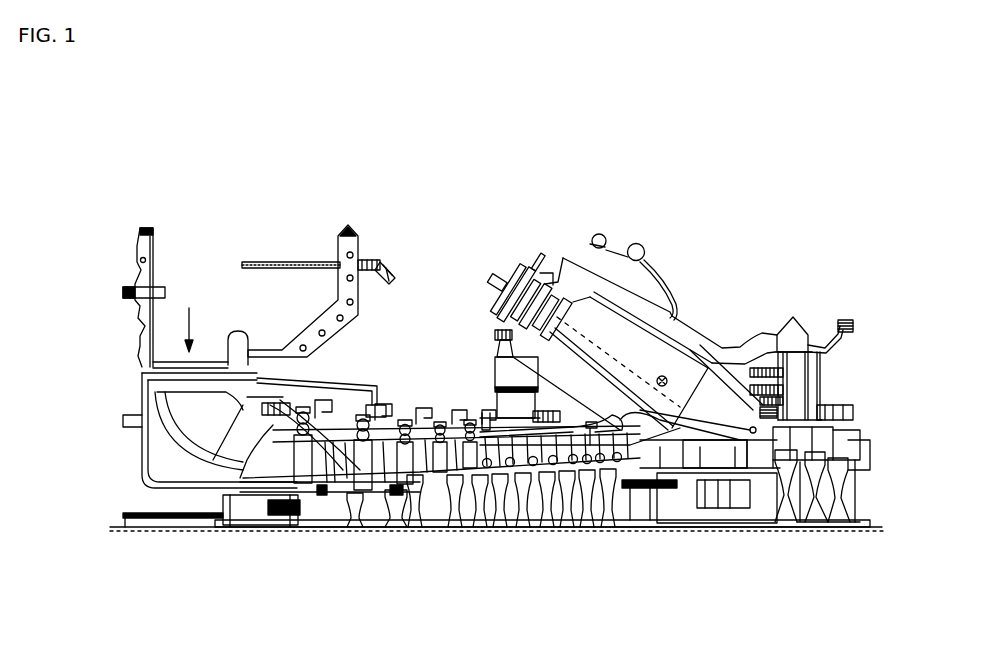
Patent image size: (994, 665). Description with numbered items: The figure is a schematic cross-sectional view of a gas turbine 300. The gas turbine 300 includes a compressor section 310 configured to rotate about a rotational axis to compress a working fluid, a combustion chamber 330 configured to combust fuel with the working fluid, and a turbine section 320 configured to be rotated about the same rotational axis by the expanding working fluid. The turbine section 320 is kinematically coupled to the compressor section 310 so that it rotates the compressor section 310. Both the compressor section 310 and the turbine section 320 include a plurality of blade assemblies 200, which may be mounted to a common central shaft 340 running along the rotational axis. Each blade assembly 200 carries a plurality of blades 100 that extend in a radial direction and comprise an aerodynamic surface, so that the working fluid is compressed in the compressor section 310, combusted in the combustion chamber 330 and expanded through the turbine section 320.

The gas turbine 300 is at (734, 143).
The compressor section 310 is at (405, 539).
The combustion chamber 330 is at (651, 343).
The blade 100 is at (848, 427).
The blade assembly 200 is at (840, 475).
The central shaft 340 is at (690, 527).
The turbine section 320 is at (799, 536).